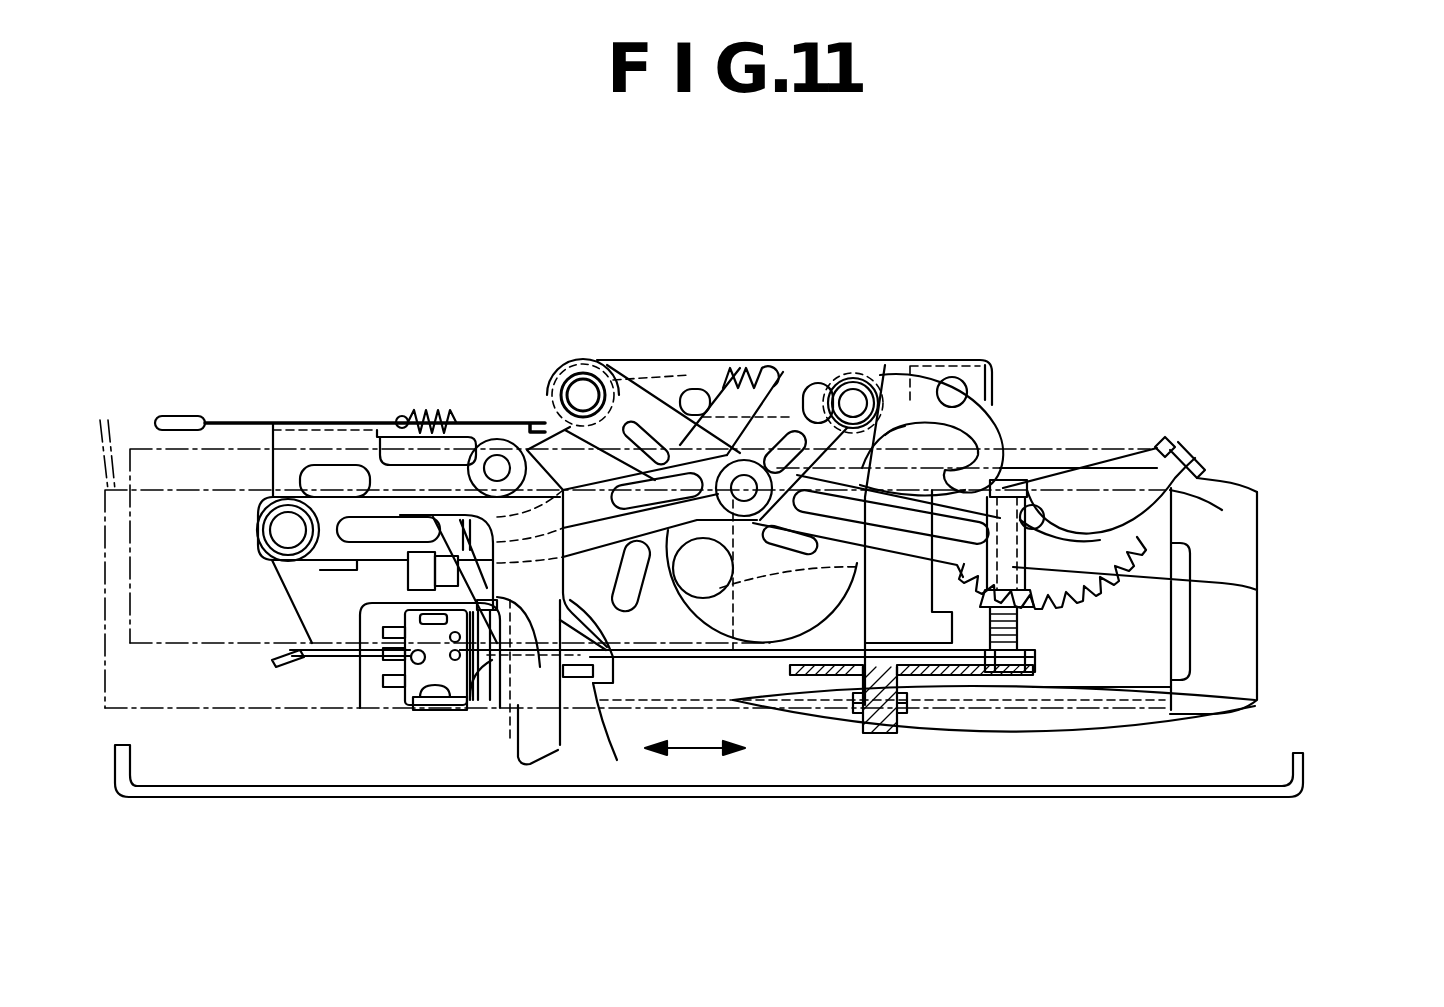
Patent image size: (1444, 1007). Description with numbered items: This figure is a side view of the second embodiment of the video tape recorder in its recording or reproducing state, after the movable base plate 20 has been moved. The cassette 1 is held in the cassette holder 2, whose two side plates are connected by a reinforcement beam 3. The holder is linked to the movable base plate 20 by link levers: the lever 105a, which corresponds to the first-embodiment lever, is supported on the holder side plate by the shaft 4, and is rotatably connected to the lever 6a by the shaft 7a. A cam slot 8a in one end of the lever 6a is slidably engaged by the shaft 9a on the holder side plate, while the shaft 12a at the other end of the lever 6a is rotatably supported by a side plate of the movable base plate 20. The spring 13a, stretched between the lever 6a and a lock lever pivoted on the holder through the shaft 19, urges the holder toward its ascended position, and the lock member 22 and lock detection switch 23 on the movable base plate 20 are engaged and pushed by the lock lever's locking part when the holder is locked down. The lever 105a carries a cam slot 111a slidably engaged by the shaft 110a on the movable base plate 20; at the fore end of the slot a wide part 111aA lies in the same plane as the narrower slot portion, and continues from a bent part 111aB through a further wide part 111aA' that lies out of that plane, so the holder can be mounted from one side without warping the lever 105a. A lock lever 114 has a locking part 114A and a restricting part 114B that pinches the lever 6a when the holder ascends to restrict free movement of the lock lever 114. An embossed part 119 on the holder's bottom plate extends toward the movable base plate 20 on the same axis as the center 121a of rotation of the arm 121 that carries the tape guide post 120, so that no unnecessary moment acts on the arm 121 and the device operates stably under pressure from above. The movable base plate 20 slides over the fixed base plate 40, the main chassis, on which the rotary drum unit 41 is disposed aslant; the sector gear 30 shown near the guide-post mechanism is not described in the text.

The cassette 1 is at (147, 462).
The cassette holder 2 is at (292, 463).
The reinforcement beam 3 is at (995, 430).
The shaft 4 is at (584, 390).
The lever 6a is at (818, 385).
The shaft 7a is at (744, 480).
The cam slot 8a is at (1030, 506).
The shaft 9a is at (854, 401).
The shaft 12a is at (286, 530).
The spring 13a is at (448, 422).
The shaft 19 is at (495, 466).
The movable base plate 20 is at (208, 680).
The lock member 22 is at (513, 652).
The lock detection switch 23 is at (430, 682).
The sector gear 30 is at (1052, 585).
The fixed base plate 40 is at (1303, 762).
The rotary drum unit 41 is at (1240, 557).
The lever 105a is at (667, 417).
The shaft 110a is at (1088, 458).
The cam slot 111a is at (1122, 470).
The wide part 111aA is at (1286, 504).
The wide part 111aA' is at (1304, 462).
The bent part 111aB is at (1193, 452).
The lock lever 114 is at (618, 685).
The locking part 114A is at (494, 668).
The restricting part 114B is at (578, 678).
The embossed part 119 is at (898, 725).
The tape guide post 120 is at (1034, 476).
The arm 121 is at (822, 676).
The center of rotation 121a is at (877, 735).